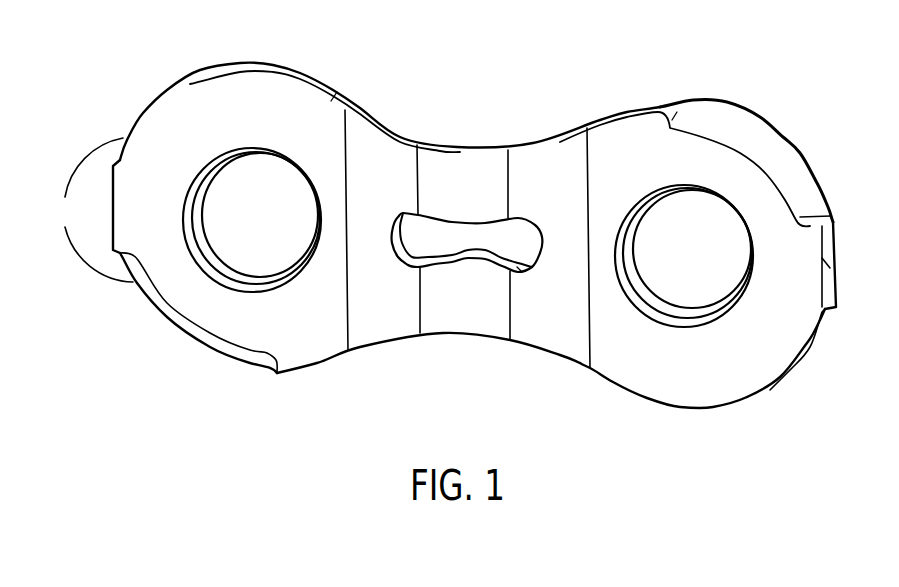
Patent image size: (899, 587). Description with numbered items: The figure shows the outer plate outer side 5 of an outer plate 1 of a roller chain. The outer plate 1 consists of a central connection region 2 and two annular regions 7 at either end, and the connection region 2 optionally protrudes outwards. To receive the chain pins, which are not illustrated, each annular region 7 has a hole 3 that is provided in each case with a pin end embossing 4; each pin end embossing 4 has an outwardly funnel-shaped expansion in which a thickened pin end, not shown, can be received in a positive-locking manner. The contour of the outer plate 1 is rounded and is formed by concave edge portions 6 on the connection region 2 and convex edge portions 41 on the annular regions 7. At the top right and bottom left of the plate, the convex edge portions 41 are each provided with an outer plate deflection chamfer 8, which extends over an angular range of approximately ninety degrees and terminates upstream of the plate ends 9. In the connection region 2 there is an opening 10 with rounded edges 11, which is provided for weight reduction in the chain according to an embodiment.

The outer plate 1 is at (500, 141).
The connection region 2 is at (403, 157).
The hole 3 is at (685, 230).
The pin end embossing 4 is at (616, 238).
The outer plate outer side 5 is at (463, 170).
The concave edge portions 6 is at (436, 142).
The annular regions 7 is at (157, 130).
The outer plate deflection chamfer 8 is at (720, 124).
The plate ends 9 is at (827, 243).
The opening 10 is at (486, 235).
The rounded edges 11 is at (392, 234).
The convex edge portions 41 is at (850, 363).